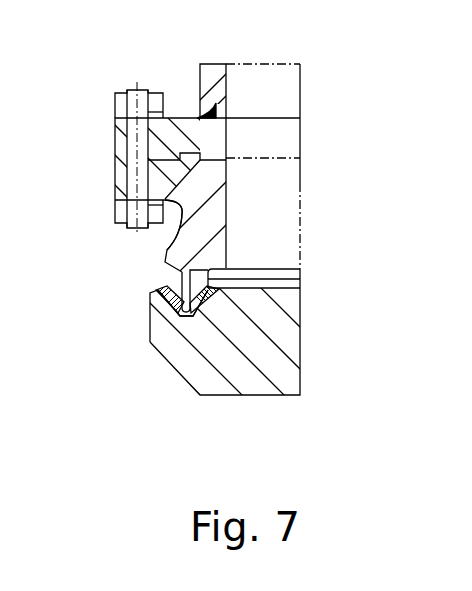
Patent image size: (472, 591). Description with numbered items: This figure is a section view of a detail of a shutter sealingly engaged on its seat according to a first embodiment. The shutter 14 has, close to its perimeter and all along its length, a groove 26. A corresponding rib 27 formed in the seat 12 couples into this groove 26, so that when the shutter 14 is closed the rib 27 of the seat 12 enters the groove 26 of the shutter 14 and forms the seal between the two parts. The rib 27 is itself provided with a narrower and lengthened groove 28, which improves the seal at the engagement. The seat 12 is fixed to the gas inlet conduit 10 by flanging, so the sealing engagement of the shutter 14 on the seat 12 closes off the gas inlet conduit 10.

The gas inlet conduit 10 is at (212, 74).
The seat 12 is at (210, 223).
The shutter 14 is at (278, 318).
The groove 26 is at (179, 313).
The rib 27 is at (165, 277).
The narrower and lengthened groove 28 is at (178, 272).